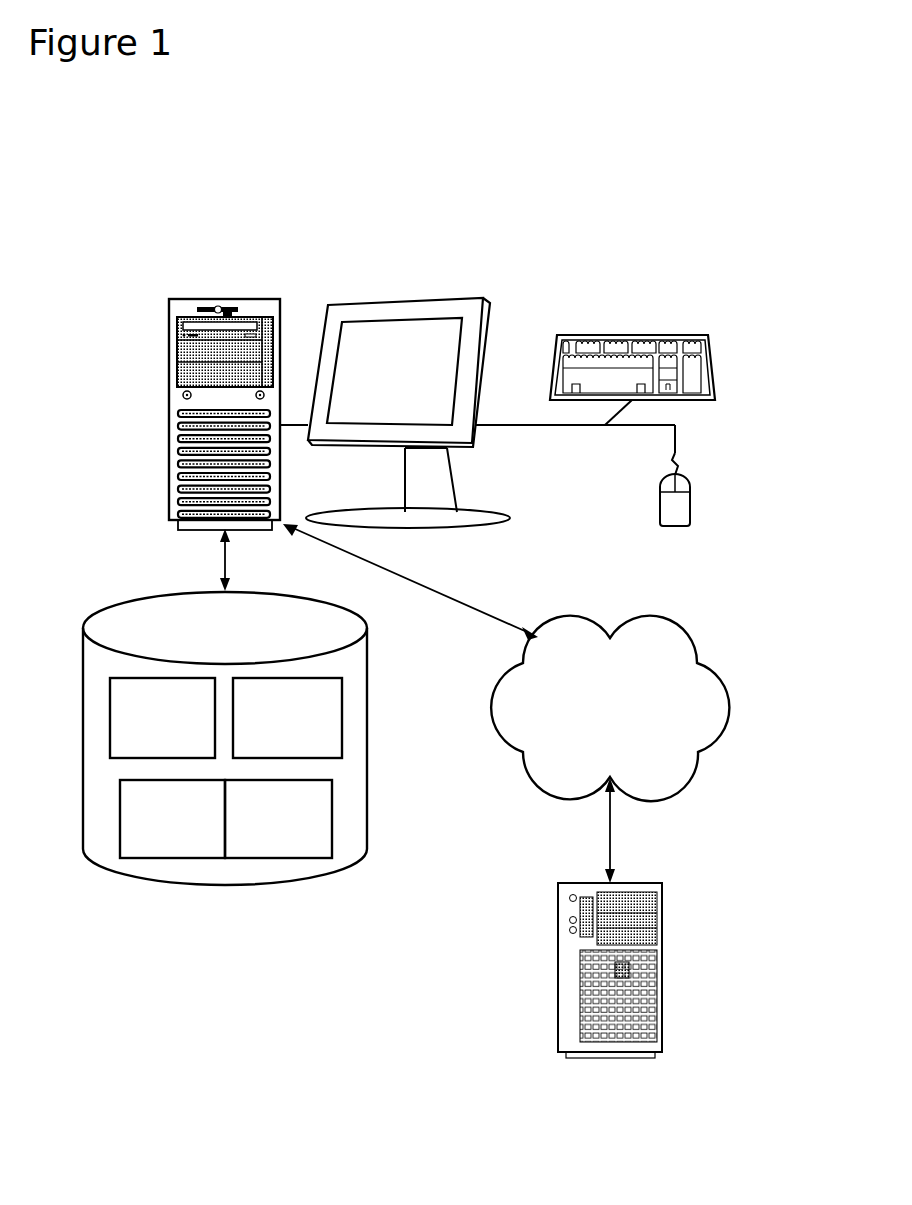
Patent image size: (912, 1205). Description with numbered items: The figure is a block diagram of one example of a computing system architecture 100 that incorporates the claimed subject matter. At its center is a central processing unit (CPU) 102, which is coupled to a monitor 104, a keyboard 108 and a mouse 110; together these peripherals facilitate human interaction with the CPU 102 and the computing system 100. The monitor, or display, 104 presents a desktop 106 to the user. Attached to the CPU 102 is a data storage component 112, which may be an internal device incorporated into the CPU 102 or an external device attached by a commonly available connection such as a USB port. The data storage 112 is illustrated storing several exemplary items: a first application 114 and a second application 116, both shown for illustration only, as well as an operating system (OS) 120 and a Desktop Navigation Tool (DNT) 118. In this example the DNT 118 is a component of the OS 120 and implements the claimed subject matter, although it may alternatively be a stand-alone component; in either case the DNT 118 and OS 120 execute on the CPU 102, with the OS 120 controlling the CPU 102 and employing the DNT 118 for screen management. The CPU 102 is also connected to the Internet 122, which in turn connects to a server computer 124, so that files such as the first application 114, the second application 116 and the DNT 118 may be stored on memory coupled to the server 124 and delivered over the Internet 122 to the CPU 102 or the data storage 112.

The computing system architecture 100 is at (390, 167).
The central processing unit 102 is at (267, 297).
The monitor 104 is at (489, 330).
The desktop 106 is at (388, 347).
The keyboard 108 is at (690, 346).
The mouse 110 is at (677, 525).
The data storage component 112 is at (210, 656).
The first application 114 is at (147, 740).
The second application 116 is at (272, 740).
The Desktop Navigation Tool 118 is at (157, 841).
The operating system 120 is at (263, 841).
The Internet 122 is at (595, 728).
The server computer 124 is at (663, 970).